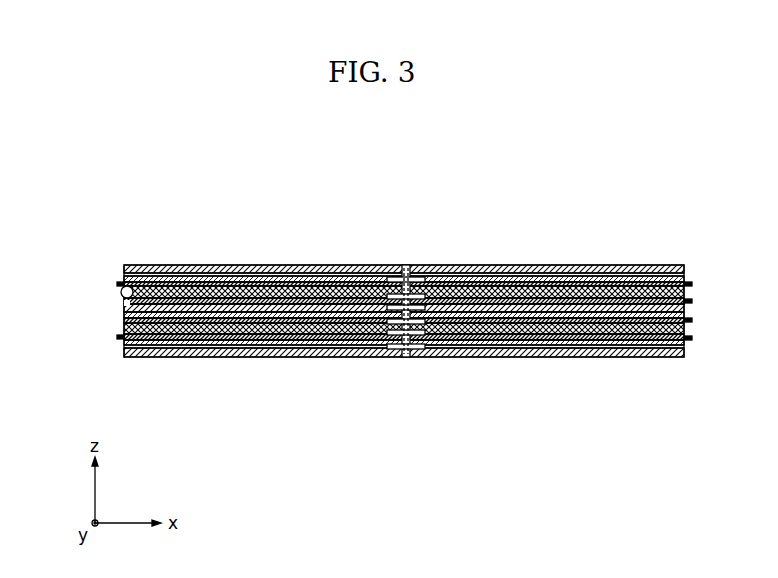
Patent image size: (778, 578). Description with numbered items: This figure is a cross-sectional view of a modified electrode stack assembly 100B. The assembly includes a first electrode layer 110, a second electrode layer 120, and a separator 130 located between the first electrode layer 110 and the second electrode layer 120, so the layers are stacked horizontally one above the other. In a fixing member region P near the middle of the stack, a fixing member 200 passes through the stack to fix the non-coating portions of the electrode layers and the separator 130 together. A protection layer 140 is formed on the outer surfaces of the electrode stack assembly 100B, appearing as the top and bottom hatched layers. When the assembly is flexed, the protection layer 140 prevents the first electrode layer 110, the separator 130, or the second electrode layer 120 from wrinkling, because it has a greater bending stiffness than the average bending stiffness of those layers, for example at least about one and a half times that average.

The electrode stack assembly 100B is at (636, 251).
The first electrode layer 110 is at (127, 306).
The second electrode layer 120 is at (128, 291).
The separator 130 is at (121, 298).
The protection layer 140 is at (160, 265).
The fixing member 200 is at (404, 357).
The fixing member region P is at (420, 258).